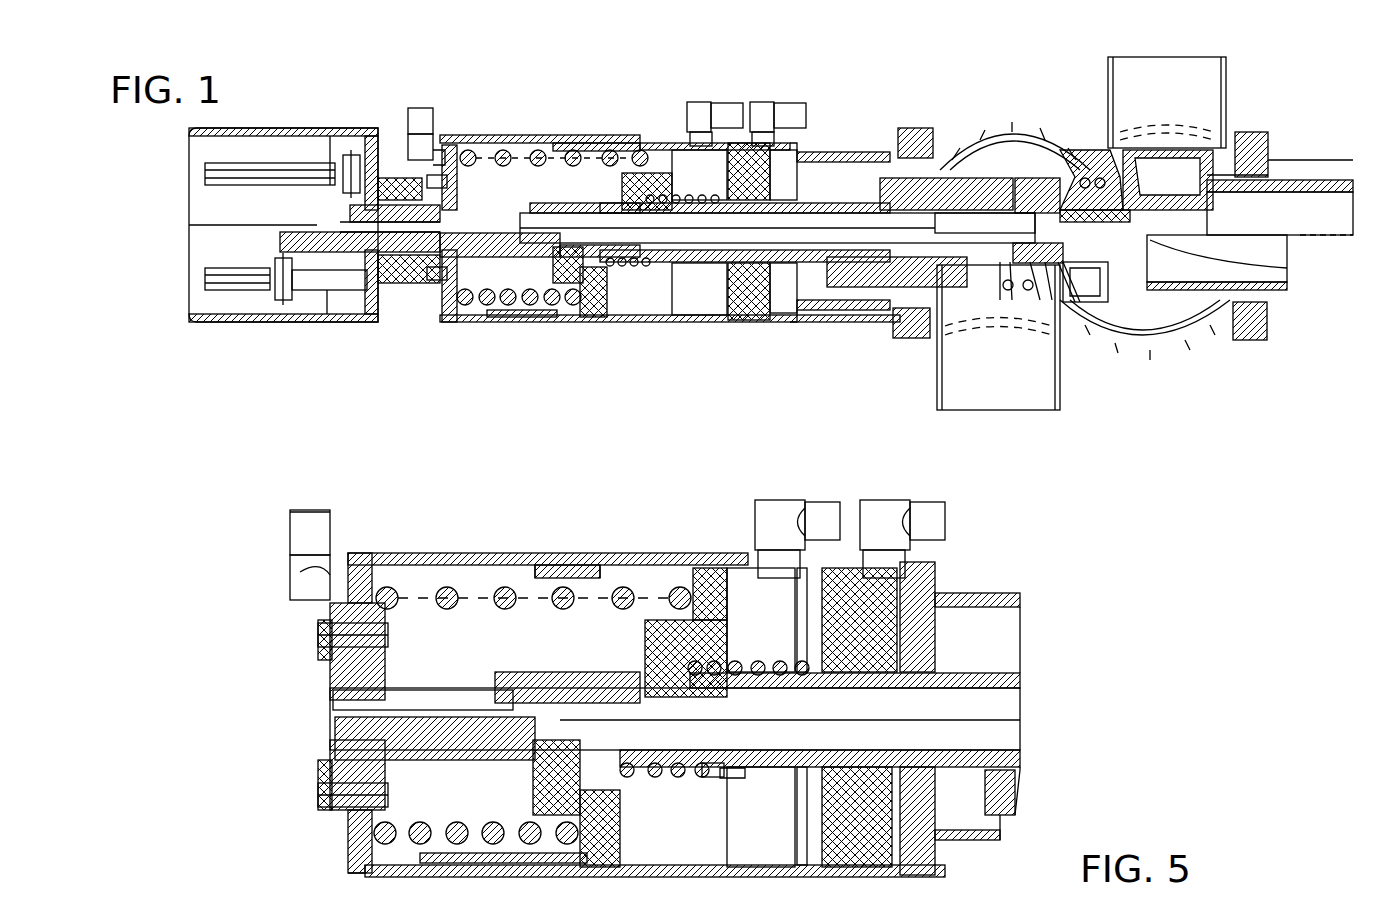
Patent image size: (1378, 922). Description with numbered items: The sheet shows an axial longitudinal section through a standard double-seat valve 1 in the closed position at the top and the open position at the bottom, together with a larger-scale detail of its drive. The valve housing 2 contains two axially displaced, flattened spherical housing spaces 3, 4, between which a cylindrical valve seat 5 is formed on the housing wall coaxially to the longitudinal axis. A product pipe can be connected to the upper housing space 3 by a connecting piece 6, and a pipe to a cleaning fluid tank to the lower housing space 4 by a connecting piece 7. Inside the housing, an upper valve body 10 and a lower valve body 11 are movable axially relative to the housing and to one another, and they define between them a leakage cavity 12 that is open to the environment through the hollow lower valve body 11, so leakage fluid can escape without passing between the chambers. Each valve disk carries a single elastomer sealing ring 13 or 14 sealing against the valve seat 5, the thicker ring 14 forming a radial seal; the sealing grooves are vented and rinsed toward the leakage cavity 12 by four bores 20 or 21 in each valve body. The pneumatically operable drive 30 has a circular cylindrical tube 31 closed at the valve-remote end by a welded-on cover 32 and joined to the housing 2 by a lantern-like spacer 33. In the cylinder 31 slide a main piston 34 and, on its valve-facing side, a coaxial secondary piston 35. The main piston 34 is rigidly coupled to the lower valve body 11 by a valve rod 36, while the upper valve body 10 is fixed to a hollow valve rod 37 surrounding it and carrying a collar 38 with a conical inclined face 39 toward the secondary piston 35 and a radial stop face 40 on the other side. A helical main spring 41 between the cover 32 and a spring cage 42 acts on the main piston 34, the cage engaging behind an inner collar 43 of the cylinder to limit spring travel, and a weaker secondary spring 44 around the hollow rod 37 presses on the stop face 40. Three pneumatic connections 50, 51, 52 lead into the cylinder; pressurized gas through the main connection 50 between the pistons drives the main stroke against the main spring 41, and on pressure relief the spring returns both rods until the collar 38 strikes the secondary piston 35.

In FIG. 1, the double-seat valve 1 is at (771, 250).
In FIG. 1, the valve housing 2 is at (1085, 150).
In FIG. 1, the first housing space 3 is at (1000, 140).
In FIG. 1, the second housing space 4 is at (1180, 312).
In FIG. 1, the valve seat 5 is at (1085, 295).
In FIG. 1, the connecting piece 6 is at (940, 386).
In FIG. 1, the connecting piece 7 is at (1228, 92).
In FIG. 1, the upper valve body 10 is at (1050, 195).
In FIG. 1, the lower valve body 11 is at (1112, 185).
In FIG. 1, the leakage cavity 12 is at (1087, 175).
In FIG. 1, the sealing ring 13 is at (1010, 310).
In FIG. 1, the sealing ring 14 is at (1045, 305).
In FIG. 1, the bores 20 is at (1008, 275).
In FIG. 1, the bores 21 is at (1075, 305).
In FIG. 1, the drive 30 is at (558, 72).
In FIG. 5, the drive 30 is at (520, 465).
In FIG. 1, the cylinder 31 is at (665, 323).
In FIG. 5, the cylinder 31 is at (490, 565).
In FIG. 1, the cover 32 is at (445, 305).
In FIG. 5, the cover 32 is at (320, 615).
In FIG. 1, the spacer 33 is at (838, 150).
In FIG. 5, the spacer 33 is at (985, 596).
In FIG. 1, the main piston 34 is at (610, 300).
In FIG. 5, the main piston 34 is at (700, 568).
In FIG. 1, the secondary piston 35 is at (755, 312).
In FIG. 5, the secondary piston 35 is at (925, 862).
In FIG. 1, the valve rod 36 is at (805, 243).
In FIG. 5, the valve rod 36 is at (1010, 708).
In FIG. 1, the hollow valve rod 37 is at (830, 265).
In FIG. 5, the hollow valve rod 37 is at (1018, 678).
In FIG. 5, the collar 38 is at (712, 778).
In FIG. 5, the inclined face 39 is at (748, 770).
In FIG. 5, the radial stop face 40 is at (682, 778).
In FIG. 1, the main spring 41 is at (503, 150).
In FIG. 5, the main spring 41 is at (447, 587).
In FIG. 1, the spring cage 42 is at (597, 148).
In FIG. 5, the spring cage 42 is at (605, 565).
In FIG. 5, the inner collar 43 is at (545, 565).
In FIG. 5, the secondary spring 44 is at (760, 660).
In FIG. 1, the main connection 50 is at (717, 90).
In FIG. 5, the main connection 50 is at (800, 490).
In FIG. 1, the pneumatic connection 51 is at (778, 90).
In FIG. 5, the pneumatic connection 51 is at (903, 490).
In FIG. 1, the pneumatic connection 52 is at (422, 100).
In FIG. 5, the pneumatic connection 52 is at (308, 500).